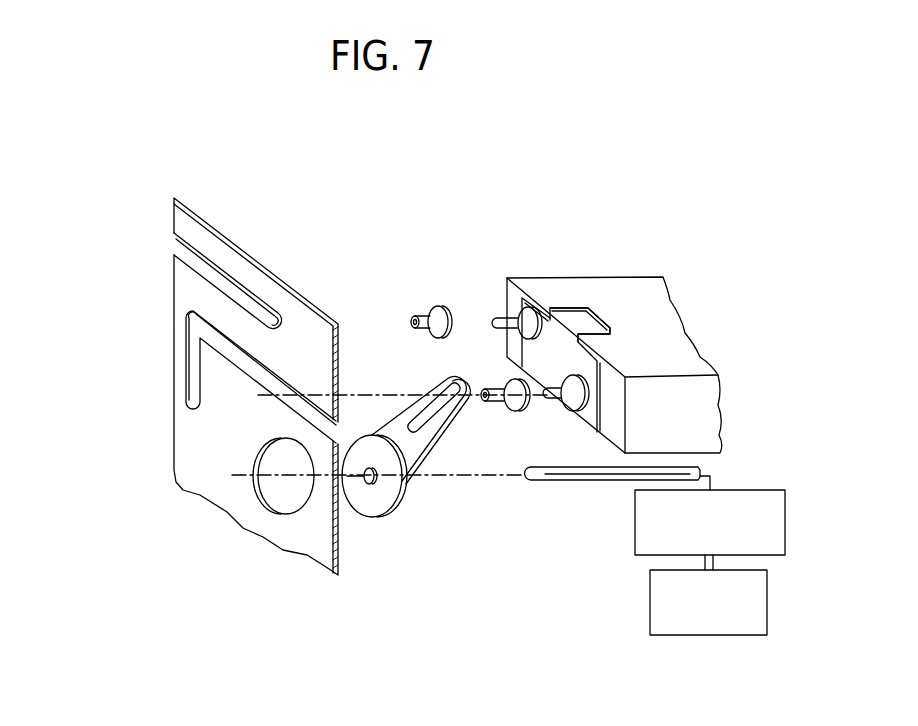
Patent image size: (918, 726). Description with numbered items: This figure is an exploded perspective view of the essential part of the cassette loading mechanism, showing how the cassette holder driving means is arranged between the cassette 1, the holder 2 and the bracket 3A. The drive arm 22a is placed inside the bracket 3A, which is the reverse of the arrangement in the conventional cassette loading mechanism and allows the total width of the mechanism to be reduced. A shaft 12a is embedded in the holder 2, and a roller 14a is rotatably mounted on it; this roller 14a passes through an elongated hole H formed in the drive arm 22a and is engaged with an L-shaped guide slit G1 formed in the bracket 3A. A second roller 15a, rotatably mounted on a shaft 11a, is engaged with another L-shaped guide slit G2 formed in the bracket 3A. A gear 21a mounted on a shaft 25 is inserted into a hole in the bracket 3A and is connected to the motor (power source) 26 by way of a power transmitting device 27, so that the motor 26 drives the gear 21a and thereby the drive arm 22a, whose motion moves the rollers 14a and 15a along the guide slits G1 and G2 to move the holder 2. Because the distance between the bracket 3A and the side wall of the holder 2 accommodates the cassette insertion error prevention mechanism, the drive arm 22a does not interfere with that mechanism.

The cassette 1 is at (628, 278).
The holder 2 is at (573, 315).
The bracket 3A is at (248, 252).
The L-shaped guide slit G1 is at (220, 343).
The L-shaped guide slit G2 is at (185, 248).
The shaft 11a is at (497, 320).
The shaft 12a is at (564, 397).
The roller 14a is at (498, 387).
The roller 15a is at (428, 312).
The gear 21a is at (375, 507).
The drive arm 22a is at (458, 413).
The shaft 25 is at (612, 481).
The motor (power source) 26 is at (650, 595).
The power transmitting device 27 is at (635, 540).
The elongated hole H is at (447, 384).